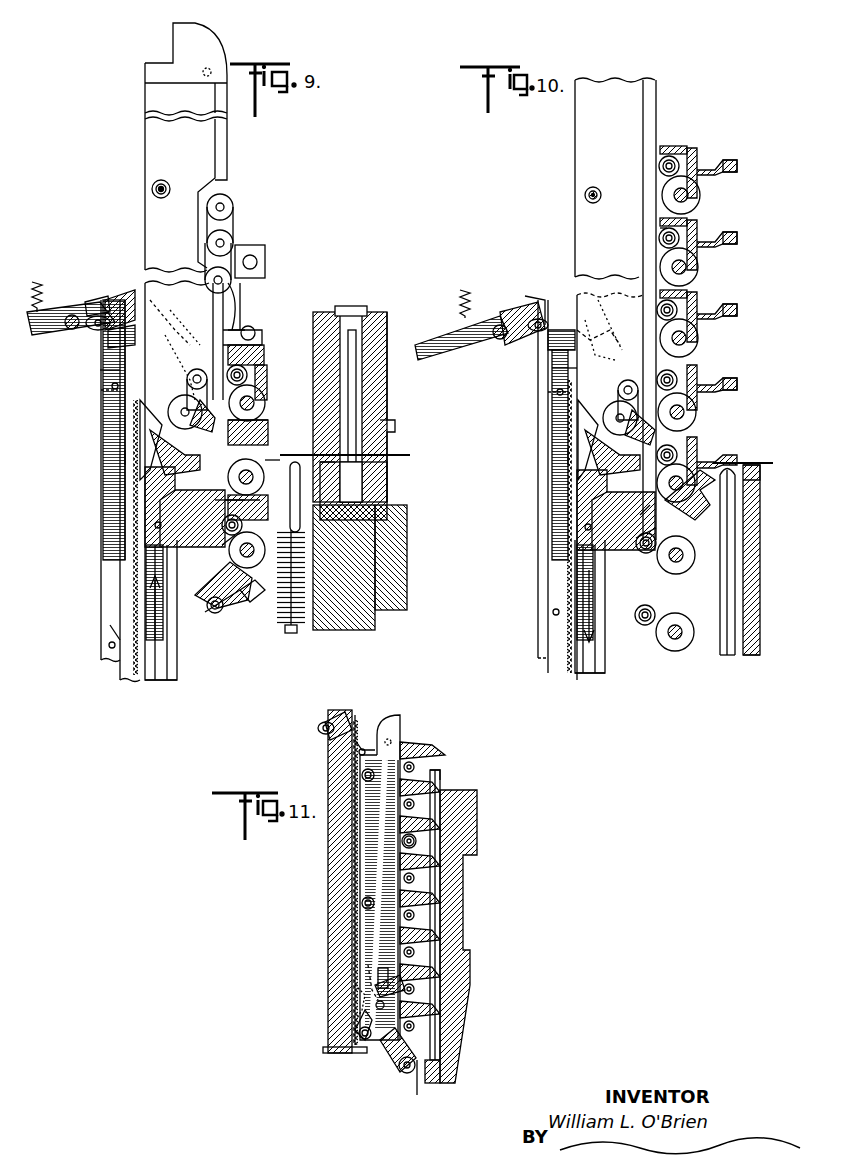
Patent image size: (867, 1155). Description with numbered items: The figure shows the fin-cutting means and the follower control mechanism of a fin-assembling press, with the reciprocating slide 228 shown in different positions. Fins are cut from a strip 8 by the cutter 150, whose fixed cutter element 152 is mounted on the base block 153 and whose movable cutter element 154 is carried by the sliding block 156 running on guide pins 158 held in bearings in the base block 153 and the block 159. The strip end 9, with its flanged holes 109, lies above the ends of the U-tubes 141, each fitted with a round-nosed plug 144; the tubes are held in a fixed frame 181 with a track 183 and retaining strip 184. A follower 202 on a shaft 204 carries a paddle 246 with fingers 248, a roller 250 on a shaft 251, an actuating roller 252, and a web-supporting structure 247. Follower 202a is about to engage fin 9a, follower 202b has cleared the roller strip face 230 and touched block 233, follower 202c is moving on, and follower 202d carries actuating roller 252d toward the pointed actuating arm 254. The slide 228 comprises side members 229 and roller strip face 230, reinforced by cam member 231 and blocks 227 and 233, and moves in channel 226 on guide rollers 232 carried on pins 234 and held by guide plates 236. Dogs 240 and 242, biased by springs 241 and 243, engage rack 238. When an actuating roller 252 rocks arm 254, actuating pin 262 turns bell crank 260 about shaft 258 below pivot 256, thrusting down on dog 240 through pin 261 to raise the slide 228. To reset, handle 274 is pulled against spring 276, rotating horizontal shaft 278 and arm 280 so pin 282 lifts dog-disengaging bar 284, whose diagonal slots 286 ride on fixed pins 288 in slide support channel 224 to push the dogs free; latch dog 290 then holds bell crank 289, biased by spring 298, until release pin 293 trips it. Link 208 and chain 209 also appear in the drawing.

In FIG. 9, the strip 8 is at (398, 458).
In FIG. 10, the strip 8 is at (770, 464).
In FIG. 9, the strip end 9 is at (282, 612).
In FIG. 10, the strip end 9 is at (720, 470).
In FIG. 9, the fin 9a is at (279, 459).
In FIG. 10, the flanged holes 109 is at (745, 460).
In FIG. 9, the U-tubes 141 is at (286, 635).
In FIG. 10, the U-tubes 141 is at (724, 600).
In FIG. 11, the U-tubes 141 is at (440, 884).
In FIG. 11, the round-nosed plug 144 is at (438, 775).
In FIG. 9, the cutter 150 is at (398, 404).
In FIG. 9, the fixed cutter element 152 is at (317, 461).
In FIG. 10, the fixed cutter element 152 is at (760, 485).
In FIG. 9, the base block 153 is at (380, 500).
In FIG. 10, the base block 153 is at (760, 503).
In FIG. 9, the movable cutter element 154 is at (268, 428).
In FIG. 9, the sliding block 156 is at (388, 420).
In FIG. 9, the guide pins 158 is at (365, 378).
In FIG. 9, the block 159 is at (320, 318).
In FIG. 9, the fixed frame 181 is at (360, 628).
In FIG. 10, the fixed frame 181 is at (758, 605).
In FIG. 11, the fixed frame 181 is at (475, 810).
In FIG. 11, the track 183 is at (435, 1078).
In FIG. 11, the retaining strip 184 is at (418, 1089).
In FIG. 10, the follower 202 is at (692, 150).
In FIG. 11, the follower 202 is at (425, 745).
In FIG. 9, the follower 202a is at (268, 440).
In FIG. 9, the follower 202b is at (268, 500).
In FIG. 9, the follower 202c is at (267, 592).
In FIG. 9, the follower 202d is at (265, 365).
In FIG. 9, the shaft 204 is at (254, 256).
In FIG. 10, the shaft 204 is at (696, 194).
In FIG. 11, the shaft 204 is at (405, 1072).
In FIG. 9, the link 208 is at (238, 290).
In FIG. 9, the chain 209 is at (233, 213).
In FIG. 11, the slide support channel 224 is at (335, 922).
In FIG. 9, the channel 226 is at (158, 672).
In FIG. 10, the channel 226 is at (580, 675).
In FIG. 9, the block 227 is at (160, 533).
In FIG. 10, the block 227 is at (592, 545).
In FIG. 9, the reciprocating slide 228 is at (142, 118).
In FIG. 10, the reciprocating slide 228 is at (566, 138).
In FIG. 11, the reciprocating slide 228 is at (344, 849).
In FIG. 9, the side members 229 is at (162, 153).
In FIG. 10, the side members 229 is at (592, 158).
In FIG. 11, the side members 229 is at (368, 870).
In FIG. 9, the roller strip face 230 is at (222, 150).
In FIG. 10, the roller strip face 230 is at (655, 105).
In FIG. 11, the roller strip face 230 is at (400, 790).
In FIG. 9, the cam member 231 is at (200, 45).
In FIG. 11, the cam member 231 is at (388, 716).
In FIG. 9, the guide rollers 232 is at (153, 188).
In FIG. 10, the guide rollers 232 is at (585, 196).
In FIG. 11, the guide rollers 232 is at (360, 775).
In FIG. 9, the block 233 is at (234, 510).
In FIG. 10, the block 233 is at (633, 513).
In FIG. 9, the pins 234 is at (156, 196).
In FIG. 10, the pins 234 is at (588, 201).
In FIG. 9, the guide plates 236 is at (178, 662).
In FIG. 10, the guide plates 236 is at (608, 656).
In FIG. 9, the rack 238 is at (125, 593).
In FIG. 10, the rack 238 is at (555, 595).
In FIG. 11, the rack 238 is at (350, 942).
In FIG. 9, the dog 240 is at (140, 492).
In FIG. 10, the dog 240 is at (578, 492).
In FIG. 11, the dog 240 is at (352, 1018).
In FIG. 9, the spring 241 is at (135, 422).
In FIG. 10, the spring 241 is at (565, 424).
In FIG. 9, the dog 242 is at (130, 406).
In FIG. 10, the dog 242 is at (560, 404).
In FIG. 11, the dog 242 is at (355, 992).
In FIG. 9, the spring 243 is at (160, 300).
In FIG. 10, the spring 243 is at (609, 477).
In FIG. 10, the paddle 246 is at (718, 164).
In FIG. 9, the web-supporting structure 247 is at (245, 491).
In FIG. 10, the web-supporting structure 247 is at (674, 146).
In FIG. 10, the fingers 248 is at (738, 166).
In FIG. 9, the roller 250 is at (225, 532).
In FIG. 10, the roller 250 is at (660, 162).
In FIG. 11, the roller 250 is at (400, 900).
In FIG. 9, the shaft 251 is at (240, 540).
In FIG. 10, the shaft 251 is at (660, 232).
In FIG. 9, the actuating roller 252 is at (230, 552).
In FIG. 10, the actuating roller 252 is at (664, 193).
In FIG. 11, the actuating roller 252 is at (415, 842).
In FIG. 9, the actuating roller 252d is at (252, 380).
In FIG. 9, the pointed actuating arm 254 is at (262, 404).
In FIG. 10, the pointed actuating arm 254 is at (615, 396).
In FIG. 11, the pointed actuating arm 254 is at (395, 978).
In FIG. 9, the pivot 256 is at (205, 375).
In FIG. 9, the shaft 258 is at (262, 478).
In FIG. 9, the bell crank 260 is at (180, 465).
In FIG. 10, the bell crank 260 is at (610, 462).
In FIG. 11, the bell crank 260 is at (371, 970).
In FIG. 9, the pin 261 is at (128, 455).
In FIG. 10, the pin 261 is at (568, 452).
In FIG. 9, the actuating pin 262 is at (191, 413).
In FIG. 10, the actuating pin 262 is at (626, 423).
In FIG. 9, the handle 274 is at (52, 308).
In FIG. 10, the handle 274 is at (458, 318).
In FIG. 9, the spring 276 is at (35, 280).
In FIG. 10, the spring 276 is at (460, 298).
In FIG. 9, the horizontal shaft 278 is at (68, 330).
In FIG. 10, the horizontal shaft 278 is at (498, 340).
In FIG. 11, the horizontal shaft 278 is at (318, 728).
In FIG. 9, the arm 280 is at (112, 358).
In FIG. 10, the arm 280 is at (560, 340).
In FIG. 9, the horizontal pin 282 is at (95, 332).
In FIG. 10, the horizontal pin 282 is at (540, 318).
In FIG. 9, the dog-disengaging bar 284 is at (100, 372).
In FIG. 10, the dog-disengaging bar 284 is at (570, 368).
In FIG. 9, the diagonal slots 286 is at (102, 396).
In FIG. 10, the diagonal slots 286 is at (556, 390).
In FIG. 9, the fixed pins 288 is at (112, 384).
In FIG. 10, the fixed pins 288 is at (548, 396).
In FIG. 9, the bell crank 289 is at (118, 296).
In FIG. 10, the bell crank 289 is at (530, 296).
In FIG. 11, the bell crank 289 is at (358, 745).
In FIG. 9, the latch dog 290 is at (87, 300).
In FIG. 10, the latch dog 290 is at (515, 312).
In FIG. 11, the latch dog 290 is at (322, 725).
In FIG. 9, the release pin 293 is at (200, 76).
In FIG. 11, the release pin 293 is at (390, 738).
In FIG. 9, the spring 298 is at (186, 352).
In FIG. 10, the spring 298 is at (610, 326).